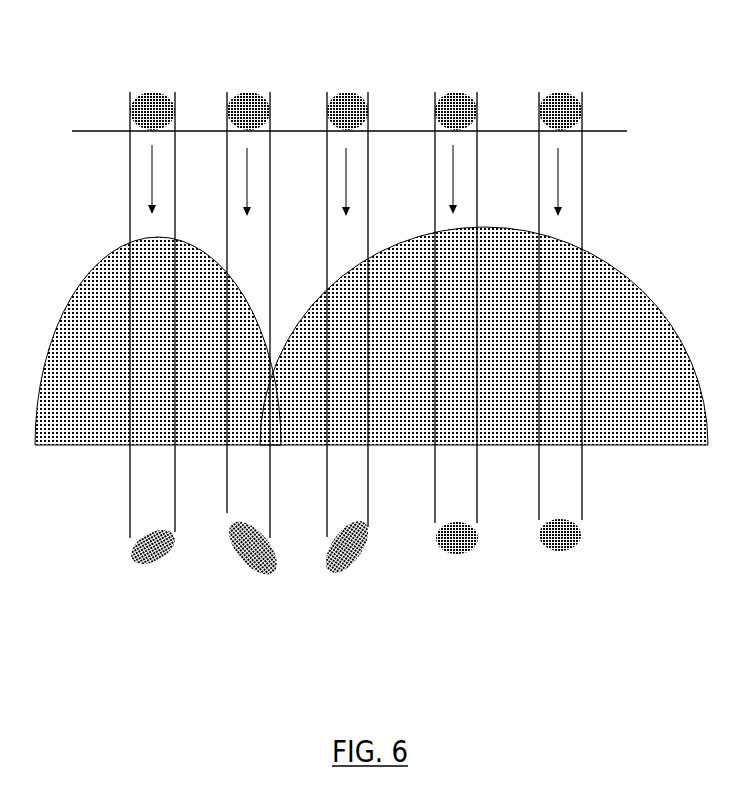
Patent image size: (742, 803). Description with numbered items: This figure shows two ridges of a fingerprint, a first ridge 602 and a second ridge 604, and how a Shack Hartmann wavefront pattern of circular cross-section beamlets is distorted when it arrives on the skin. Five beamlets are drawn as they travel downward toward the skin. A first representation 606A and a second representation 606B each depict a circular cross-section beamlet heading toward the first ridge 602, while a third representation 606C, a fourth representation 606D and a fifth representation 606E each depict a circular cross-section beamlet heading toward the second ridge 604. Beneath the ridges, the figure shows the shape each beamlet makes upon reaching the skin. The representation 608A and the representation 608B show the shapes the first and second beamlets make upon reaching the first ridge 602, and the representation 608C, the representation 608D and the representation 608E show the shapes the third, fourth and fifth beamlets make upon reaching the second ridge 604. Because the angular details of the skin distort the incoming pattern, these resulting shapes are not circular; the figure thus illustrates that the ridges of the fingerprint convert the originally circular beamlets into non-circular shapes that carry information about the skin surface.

The first ridge 602 is at (158, 341).
The second ridge 604 is at (484, 336).
The first representation of a circular cross-section beamlet 606A is at (145, 92).
The second representation of a circular cross-section beamlet 606B is at (242, 92).
The third representation of a circular cross-section beamlet 606C is at (342, 92).
The fourth representation of a circular cross-section beamlet 606D is at (450, 92).
The fifth representation of a circular cross-section beamlet 606E is at (557, 92).
The representation of a shape the beamlet makes upon reaching the first ridge 608A is at (158, 560).
The representation of a shape the beamlet makes upon reaching the first ridge 608B is at (262, 570).
The representation of a shape the beamlet makes upon reaching the second ridge 608C is at (352, 568).
The representation of a shape the beamlet makes upon reaching the second ridge 608D is at (462, 553).
The representation of a shape the beamlet makes upon reaching the second ridge 608E is at (570, 548).